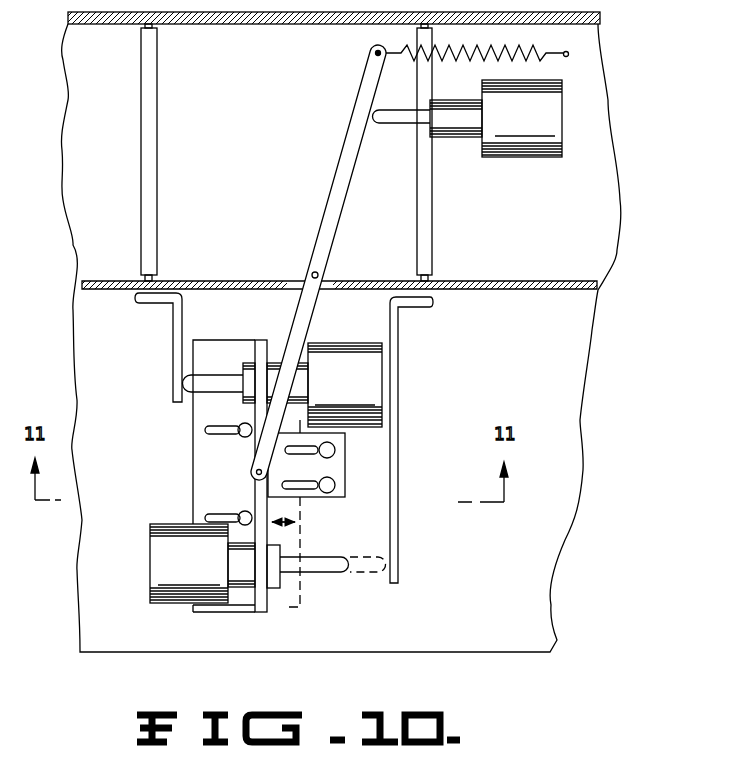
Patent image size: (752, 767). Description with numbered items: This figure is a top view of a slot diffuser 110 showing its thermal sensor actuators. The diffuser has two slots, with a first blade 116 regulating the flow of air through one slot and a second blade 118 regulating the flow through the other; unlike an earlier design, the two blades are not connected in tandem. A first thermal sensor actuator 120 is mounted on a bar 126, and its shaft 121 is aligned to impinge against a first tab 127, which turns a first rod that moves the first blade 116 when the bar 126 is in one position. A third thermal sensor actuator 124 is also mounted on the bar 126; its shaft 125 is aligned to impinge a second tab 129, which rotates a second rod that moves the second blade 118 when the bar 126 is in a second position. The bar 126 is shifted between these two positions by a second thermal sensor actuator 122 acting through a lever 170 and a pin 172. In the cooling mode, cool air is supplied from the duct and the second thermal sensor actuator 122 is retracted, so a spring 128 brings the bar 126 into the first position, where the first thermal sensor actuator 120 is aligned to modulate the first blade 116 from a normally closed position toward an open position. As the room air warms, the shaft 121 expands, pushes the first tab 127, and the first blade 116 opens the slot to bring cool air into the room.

The slot diffuser 110 is at (70, 567).
The first blade 116 is at (152, 128).
The second blade 118 is at (432, 210).
The first thermal sensor actuator 120 is at (360, 366).
The shaft 121 is at (210, 382).
The second thermal sensor actuator 122 is at (542, 110).
The third thermal sensor actuator 124 is at (157, 585).
The shaft 125 is at (328, 563).
The bar 126 is at (265, 613).
The first tab 127 is at (173, 327).
The spring 128 is at (558, 52).
The second tab 129 is at (397, 580).
The lever 170 is at (335, 182).
The pin 172 is at (313, 270).